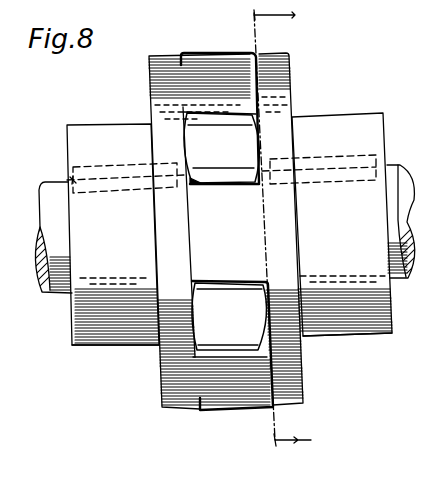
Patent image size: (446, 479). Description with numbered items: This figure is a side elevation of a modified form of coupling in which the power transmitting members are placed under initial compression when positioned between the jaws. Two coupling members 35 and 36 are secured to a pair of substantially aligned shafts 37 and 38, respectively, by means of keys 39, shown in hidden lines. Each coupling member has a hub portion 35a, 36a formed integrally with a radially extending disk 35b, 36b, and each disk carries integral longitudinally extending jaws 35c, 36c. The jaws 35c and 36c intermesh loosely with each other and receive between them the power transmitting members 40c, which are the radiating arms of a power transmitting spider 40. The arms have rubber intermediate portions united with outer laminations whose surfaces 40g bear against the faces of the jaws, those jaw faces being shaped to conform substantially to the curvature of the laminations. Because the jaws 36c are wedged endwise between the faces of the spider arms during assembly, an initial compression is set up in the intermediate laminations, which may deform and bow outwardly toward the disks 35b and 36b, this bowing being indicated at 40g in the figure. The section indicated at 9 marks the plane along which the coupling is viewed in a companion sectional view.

The section line 9- 9 is at (282, 232).
The coupling member 35 is at (67, 126).
The hub portion 35a is at (76, 347).
The radially extending disk 35b is at (149, 86).
The jaw 35c is at (205, 78).
The coupling member 36 is at (376, 115).
The hub portion 36a is at (377, 336).
The radially extending disk 36b is at (302, 368).
The jaw 36c is at (445, 186).
The shaft 37 is at (47, 294).
The shaft 38 is at (400, 280).
The key 39 is at (73, 180).
The power transmitting spider 40 is at (218, 317).
The power transmitting member 40c is at (240, 140).
The contact surface 40g is at (183, 143).